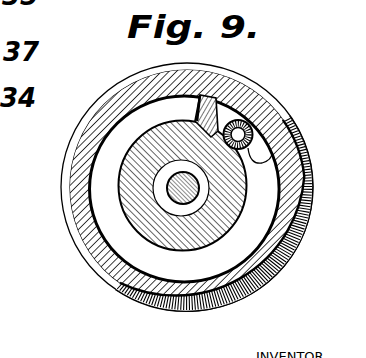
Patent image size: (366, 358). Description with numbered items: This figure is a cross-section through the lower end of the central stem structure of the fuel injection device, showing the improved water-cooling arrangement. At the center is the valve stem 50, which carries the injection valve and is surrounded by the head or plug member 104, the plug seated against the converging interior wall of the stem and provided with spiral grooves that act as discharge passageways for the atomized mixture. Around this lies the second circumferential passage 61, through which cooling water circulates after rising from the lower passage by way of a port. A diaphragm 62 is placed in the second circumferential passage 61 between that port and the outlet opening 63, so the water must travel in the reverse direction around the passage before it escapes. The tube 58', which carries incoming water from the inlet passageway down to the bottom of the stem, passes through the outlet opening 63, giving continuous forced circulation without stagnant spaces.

The diaphragm 62 is at (224, 92).
The second circumferential passage 61 is at (200, 267).
The head or plug member 104 is at (171, 204).
The valve stem 50 is at (167, 194).
The tube 58' is at (265, 121).
The outlet opening 63 is at (262, 153).